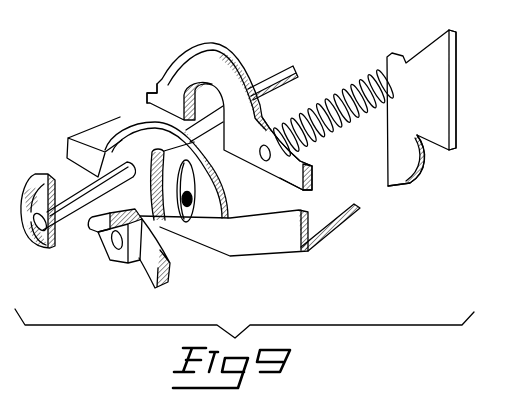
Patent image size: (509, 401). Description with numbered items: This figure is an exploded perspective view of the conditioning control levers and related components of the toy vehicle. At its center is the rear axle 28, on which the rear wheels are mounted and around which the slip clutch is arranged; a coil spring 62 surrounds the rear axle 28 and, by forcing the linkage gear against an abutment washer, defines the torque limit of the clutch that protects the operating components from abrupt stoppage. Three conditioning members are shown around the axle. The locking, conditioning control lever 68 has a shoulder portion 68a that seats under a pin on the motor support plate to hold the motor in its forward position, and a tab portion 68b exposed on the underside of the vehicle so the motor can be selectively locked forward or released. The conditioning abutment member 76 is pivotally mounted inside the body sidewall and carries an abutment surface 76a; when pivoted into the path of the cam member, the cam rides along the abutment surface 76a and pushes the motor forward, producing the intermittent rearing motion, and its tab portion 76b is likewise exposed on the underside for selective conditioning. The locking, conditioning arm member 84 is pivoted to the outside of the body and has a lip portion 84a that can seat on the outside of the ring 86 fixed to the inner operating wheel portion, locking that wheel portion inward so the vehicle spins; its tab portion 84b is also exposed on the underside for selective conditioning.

The rear axle 28 is at (66, 200).
The coil spring 62 is at (345, 97).
The locking, conditioning control lever 68 is at (205, 70).
The shoulder portion 68a is at (160, 89).
The tab portion 68b is at (298, 177).
The conditioning abutment member 76 is at (433, 71).
The abutment surface 76a is at (456, 108).
The tab portion 76b is at (396, 186).
The locking, conditioning arm member 84 is at (123, 258).
The lip portion 84a is at (92, 228).
The tab portion 84b is at (158, 282).
The ring 86 is at (46, 178).